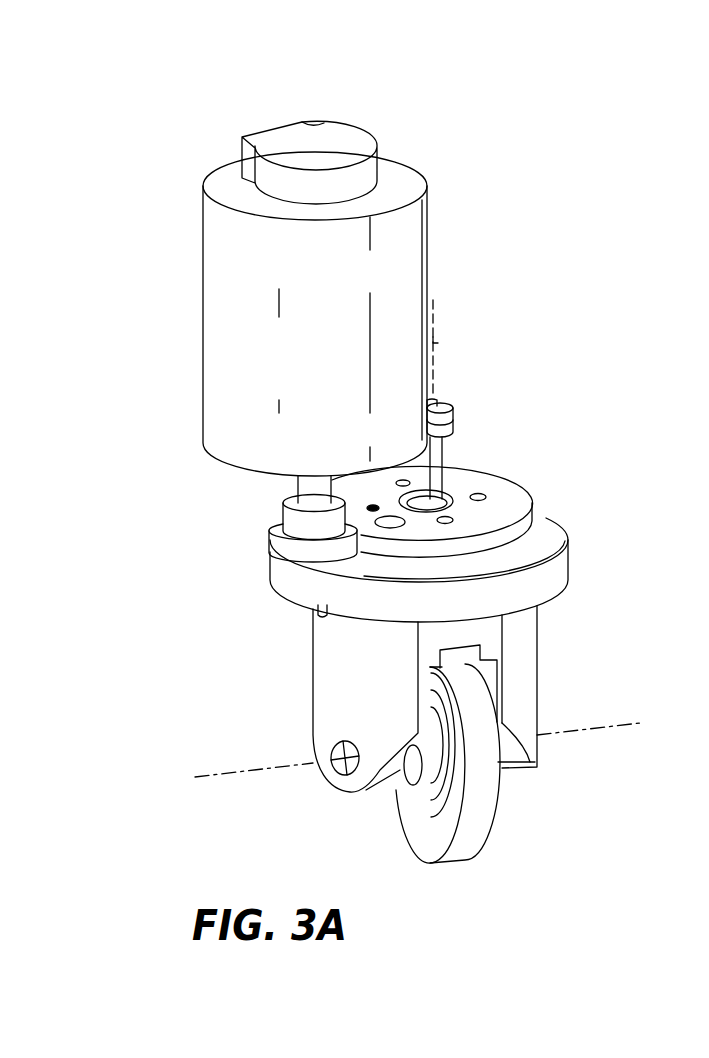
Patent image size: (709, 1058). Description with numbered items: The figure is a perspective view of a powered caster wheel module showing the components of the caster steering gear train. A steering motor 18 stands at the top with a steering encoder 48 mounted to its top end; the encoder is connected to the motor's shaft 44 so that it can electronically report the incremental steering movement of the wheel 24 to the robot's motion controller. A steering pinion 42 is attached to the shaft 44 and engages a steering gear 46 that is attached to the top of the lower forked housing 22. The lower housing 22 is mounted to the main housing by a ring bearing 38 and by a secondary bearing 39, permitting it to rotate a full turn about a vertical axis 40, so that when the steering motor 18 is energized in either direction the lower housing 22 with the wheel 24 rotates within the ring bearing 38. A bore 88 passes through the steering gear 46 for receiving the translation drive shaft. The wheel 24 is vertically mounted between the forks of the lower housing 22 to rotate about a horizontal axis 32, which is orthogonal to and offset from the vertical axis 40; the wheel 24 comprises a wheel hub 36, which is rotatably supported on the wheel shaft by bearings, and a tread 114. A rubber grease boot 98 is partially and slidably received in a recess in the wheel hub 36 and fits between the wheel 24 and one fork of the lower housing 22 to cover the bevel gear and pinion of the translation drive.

The steering motor 18 is at (213, 292).
The steering encoder 48 is at (350, 138).
The vertical axis 40 is at (446, 334).
The secondary bearing 39 is at (453, 423).
The steering gear 46 is at (517, 498).
The bore 88 is at (388, 527).
The ring bearing 38 is at (562, 565).
The shaft 44 is at (297, 487).
The steering pinion 42 is at (278, 548).
The lower forked housing 22 is at (328, 670).
The tread 114 is at (470, 850).
The wheel hub 36 is at (433, 825).
The rubber grease boot 98 is at (403, 823).
The horizontal axis 32 is at (595, 725).
The wheel 24 is at (536, 815).